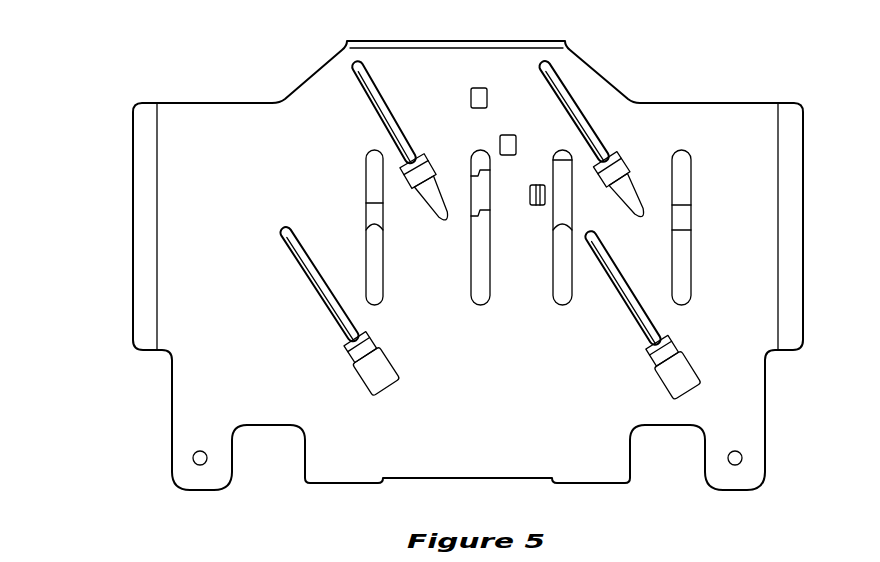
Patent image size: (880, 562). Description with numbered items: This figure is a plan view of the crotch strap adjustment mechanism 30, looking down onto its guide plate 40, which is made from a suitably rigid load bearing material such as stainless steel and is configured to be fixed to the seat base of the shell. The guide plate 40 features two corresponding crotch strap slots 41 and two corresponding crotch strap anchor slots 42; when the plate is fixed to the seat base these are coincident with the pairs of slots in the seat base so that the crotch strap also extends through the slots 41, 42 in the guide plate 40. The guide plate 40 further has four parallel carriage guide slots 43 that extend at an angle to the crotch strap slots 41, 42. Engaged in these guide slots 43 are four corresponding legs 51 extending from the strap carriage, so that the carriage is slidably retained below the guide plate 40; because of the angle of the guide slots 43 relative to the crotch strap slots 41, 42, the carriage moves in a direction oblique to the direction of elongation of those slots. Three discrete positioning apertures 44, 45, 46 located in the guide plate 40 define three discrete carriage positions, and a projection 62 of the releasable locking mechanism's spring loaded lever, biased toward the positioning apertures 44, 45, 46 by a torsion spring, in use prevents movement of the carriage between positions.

The crotch strap adjustment mechanism 30 is at (734, 74).
The guide plate 40 is at (119, 248).
The crotch strap slots 41 is at (368, 152).
The crotch strap anchor slots 42 is at (478, 152).
The carriage guide slots 43 is at (353, 62).
The positioning aperture 44 is at (541, 206).
The positioning aperture 45 is at (508, 135).
The positioning aperture 46 is at (477, 88).
The legs 51 is at (414, 165).
The projection 62 is at (533, 192).